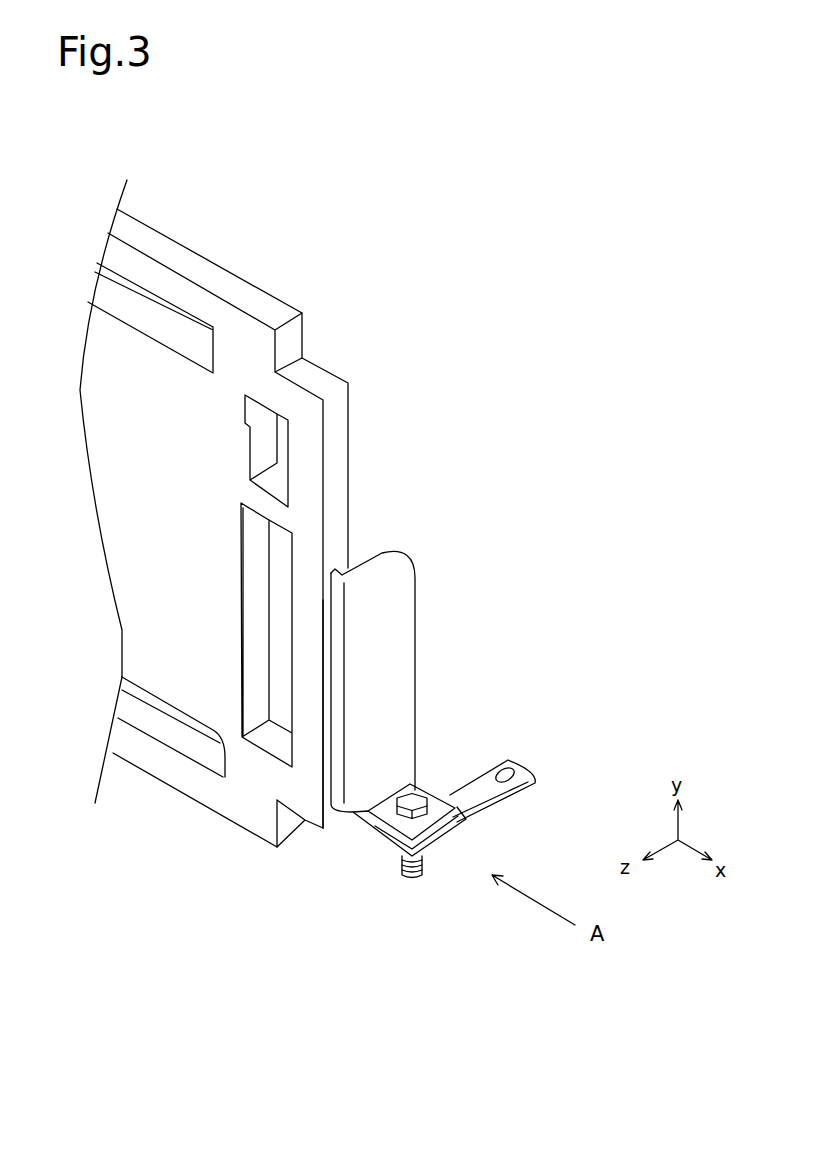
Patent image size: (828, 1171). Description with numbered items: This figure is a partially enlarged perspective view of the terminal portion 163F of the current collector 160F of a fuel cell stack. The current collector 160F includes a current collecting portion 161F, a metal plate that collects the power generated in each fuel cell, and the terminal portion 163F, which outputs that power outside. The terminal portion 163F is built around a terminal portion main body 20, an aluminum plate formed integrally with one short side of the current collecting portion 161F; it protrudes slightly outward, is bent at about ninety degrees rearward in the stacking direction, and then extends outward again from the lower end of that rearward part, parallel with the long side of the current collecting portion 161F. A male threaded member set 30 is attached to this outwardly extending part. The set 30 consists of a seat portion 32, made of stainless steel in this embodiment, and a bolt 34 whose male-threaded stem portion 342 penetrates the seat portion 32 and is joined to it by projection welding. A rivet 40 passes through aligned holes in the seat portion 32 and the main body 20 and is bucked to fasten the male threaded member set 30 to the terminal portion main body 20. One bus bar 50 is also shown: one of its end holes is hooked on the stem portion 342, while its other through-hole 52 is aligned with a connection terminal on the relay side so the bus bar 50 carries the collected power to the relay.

The current collector 160F is at (303, 513).
The current collecting portion 161F is at (243, 343).
The terminal portion 163F is at (437, 625).
The terminal portion main body 20 is at (395, 690).
The male threaded member set 30 is at (426, 897).
The seat portion 32 is at (400, 886).
The bolt 34 is at (452, 830).
The stem portion 342 is at (396, 868).
The rivet 40 is at (448, 803).
The bus bar 50 is at (528, 763).
The through-hole 52 is at (500, 768).